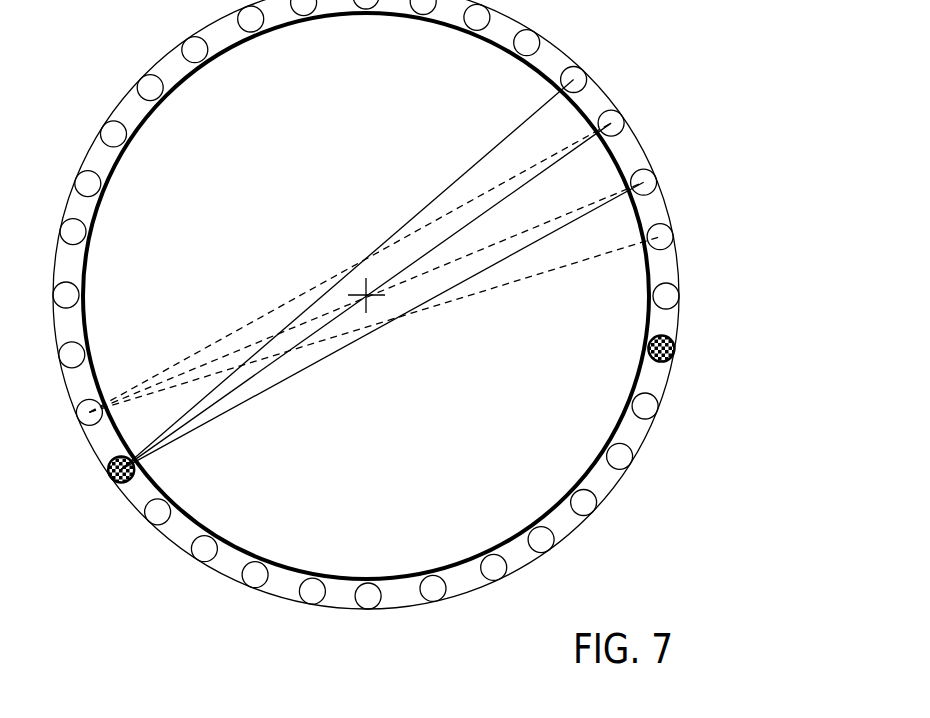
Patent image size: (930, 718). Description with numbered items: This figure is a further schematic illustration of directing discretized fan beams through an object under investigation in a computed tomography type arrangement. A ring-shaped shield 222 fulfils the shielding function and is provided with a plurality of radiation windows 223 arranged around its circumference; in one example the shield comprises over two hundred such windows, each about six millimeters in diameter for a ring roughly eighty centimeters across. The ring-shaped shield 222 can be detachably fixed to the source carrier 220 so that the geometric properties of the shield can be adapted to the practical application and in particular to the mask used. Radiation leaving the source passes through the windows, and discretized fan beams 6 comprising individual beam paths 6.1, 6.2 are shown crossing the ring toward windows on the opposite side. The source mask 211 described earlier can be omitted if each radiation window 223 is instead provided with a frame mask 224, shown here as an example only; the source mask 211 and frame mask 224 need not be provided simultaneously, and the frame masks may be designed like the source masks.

The source carrier 220 is at (641, 447).
The ring-shaped shield 222 is at (655, 388).
The radiation window 223 is at (430, 594).
The frame mask 224 is at (670, 353).
The source mask 211 is at (124, 481).
The beam path 6 is at (310, 350).
The beam 6.1 is at (227, 410).
The beam 6.2 is at (270, 368).